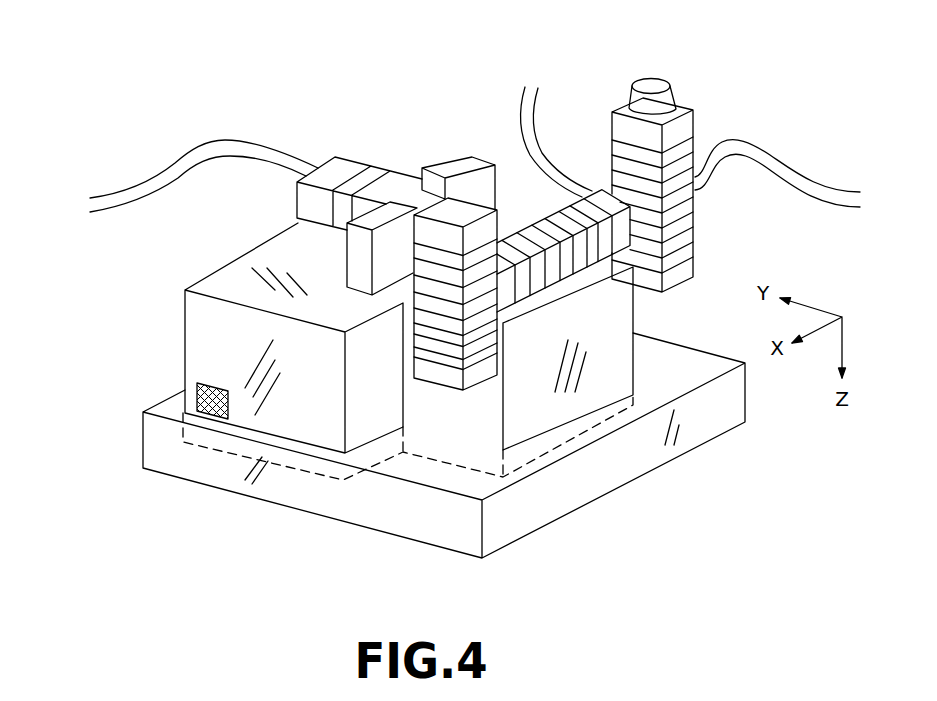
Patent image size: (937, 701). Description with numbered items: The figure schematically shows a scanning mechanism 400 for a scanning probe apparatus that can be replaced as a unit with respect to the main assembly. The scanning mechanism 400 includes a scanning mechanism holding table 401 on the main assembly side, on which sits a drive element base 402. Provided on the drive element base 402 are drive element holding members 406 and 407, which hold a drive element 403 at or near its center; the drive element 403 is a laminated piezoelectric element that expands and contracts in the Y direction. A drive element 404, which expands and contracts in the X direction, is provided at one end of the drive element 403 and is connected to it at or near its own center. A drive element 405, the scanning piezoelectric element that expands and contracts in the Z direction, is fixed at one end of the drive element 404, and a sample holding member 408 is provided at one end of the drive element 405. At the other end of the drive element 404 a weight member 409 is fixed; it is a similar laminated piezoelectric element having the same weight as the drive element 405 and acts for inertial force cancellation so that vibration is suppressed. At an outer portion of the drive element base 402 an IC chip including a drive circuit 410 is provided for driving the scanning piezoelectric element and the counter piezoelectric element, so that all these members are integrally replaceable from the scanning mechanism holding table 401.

The scanning mechanism 400 is at (98, 160).
The scanning mechanism holding table 401 is at (700, 426).
The drive element base 402 is at (193, 355).
The drive element 403 is at (510, 213).
The drive element 404 is at (543, 268).
The drive element 405 is at (683, 185).
The drive element holding member 406 is at (372, 220).
The drive element holding member 407 is at (452, 179).
The sample holding member 408 is at (672, 107).
The weight member 409 is at (432, 320).
The drive circuit 410 is at (212, 412).